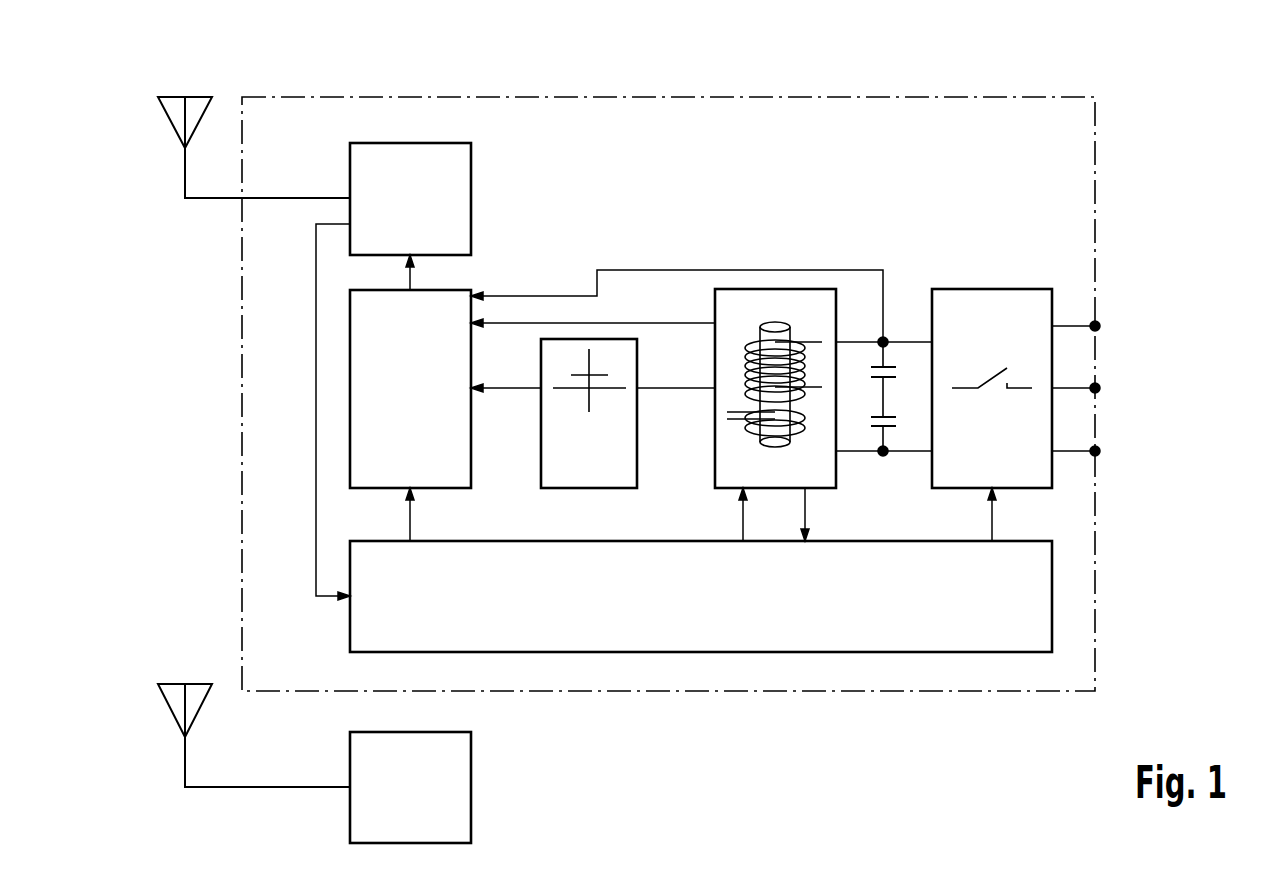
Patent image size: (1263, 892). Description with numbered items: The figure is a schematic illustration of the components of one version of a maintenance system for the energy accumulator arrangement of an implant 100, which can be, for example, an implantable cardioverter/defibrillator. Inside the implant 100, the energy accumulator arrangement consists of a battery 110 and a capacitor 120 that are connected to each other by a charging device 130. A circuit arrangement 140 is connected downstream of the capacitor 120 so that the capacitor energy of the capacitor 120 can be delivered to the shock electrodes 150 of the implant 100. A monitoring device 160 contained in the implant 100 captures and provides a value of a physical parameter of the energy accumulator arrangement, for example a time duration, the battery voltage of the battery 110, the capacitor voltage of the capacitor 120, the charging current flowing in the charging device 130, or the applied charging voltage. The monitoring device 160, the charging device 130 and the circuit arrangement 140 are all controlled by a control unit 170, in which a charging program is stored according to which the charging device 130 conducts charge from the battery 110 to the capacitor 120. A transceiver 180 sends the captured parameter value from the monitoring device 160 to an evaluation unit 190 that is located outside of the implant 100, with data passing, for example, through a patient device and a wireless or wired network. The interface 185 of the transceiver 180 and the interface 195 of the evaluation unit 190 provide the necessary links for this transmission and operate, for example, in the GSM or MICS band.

The implant 100 is at (1095, 551).
The battery 110 is at (630, 488).
The capacitor 120 is at (899, 343).
The charging device 130 is at (830, 488).
The circuit arrangement 140 is at (990, 289).
The shock electrodes 150 is at (1100, 326).
The monitoring device 160 is at (463, 488).
The control unit 170 is at (700, 652).
The transceiver 180 is at (471, 198).
The interface of the transceiver 185 is at (170, 124).
The evaluation unit 190 is at (471, 787).
The interface of the evaluation unit 195 is at (170, 712).